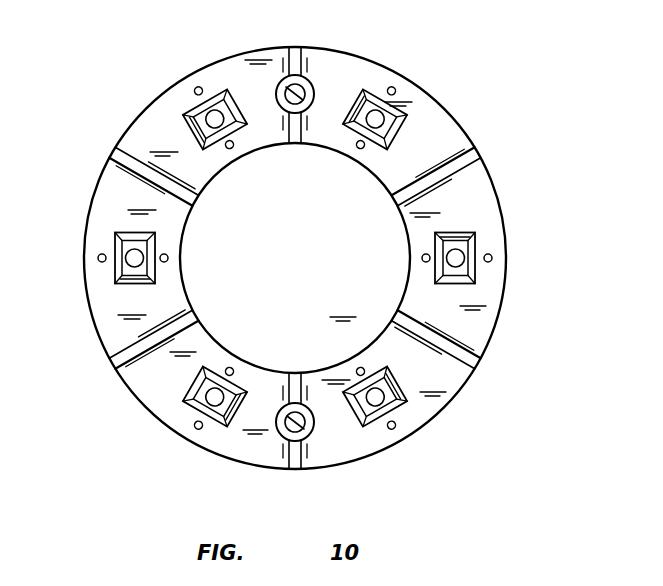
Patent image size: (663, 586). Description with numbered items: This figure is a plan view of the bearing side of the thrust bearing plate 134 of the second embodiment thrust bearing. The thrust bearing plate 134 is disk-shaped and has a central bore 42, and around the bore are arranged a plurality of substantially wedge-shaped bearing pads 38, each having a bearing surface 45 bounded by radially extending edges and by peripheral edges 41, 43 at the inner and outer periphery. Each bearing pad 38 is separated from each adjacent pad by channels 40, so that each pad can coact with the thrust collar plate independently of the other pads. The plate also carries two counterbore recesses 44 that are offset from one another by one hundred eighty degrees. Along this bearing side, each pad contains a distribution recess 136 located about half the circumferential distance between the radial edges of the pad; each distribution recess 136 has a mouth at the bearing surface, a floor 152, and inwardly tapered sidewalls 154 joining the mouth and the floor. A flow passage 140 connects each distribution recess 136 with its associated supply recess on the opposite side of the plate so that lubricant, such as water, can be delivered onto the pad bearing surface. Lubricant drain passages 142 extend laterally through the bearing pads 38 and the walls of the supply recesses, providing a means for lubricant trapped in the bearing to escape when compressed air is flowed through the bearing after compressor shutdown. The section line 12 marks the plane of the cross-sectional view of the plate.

The section line 12- 12 is at (77, 258).
The bearing pads 38 is at (475, 323).
The channels 40 is at (335, 274).
The peripheral edge 41 is at (210, 181).
The central bore 42 is at (295, 258).
The peripheral edge 43 is at (137, 121).
The counterbore recesses 44 is at (300, 92).
The bearing surface 45 is at (460, 193).
The thrust bearing plate 134 is at (312, 251).
The distribution recesses 136 is at (115, 267).
The flow passages 140 is at (452, 252).
The lubricant drain passages 142 is at (391, 86).
The floor 152 is at (167, 264).
The inwardly tapered sidewalls 154 is at (237, 92).